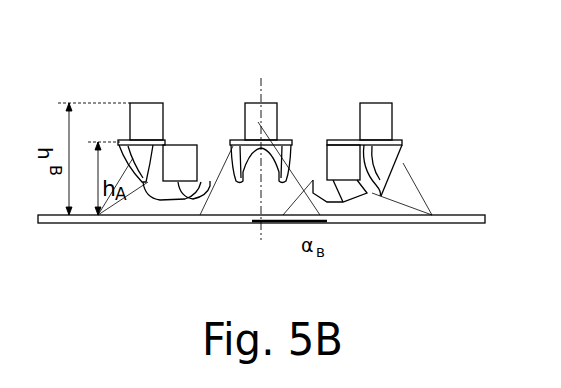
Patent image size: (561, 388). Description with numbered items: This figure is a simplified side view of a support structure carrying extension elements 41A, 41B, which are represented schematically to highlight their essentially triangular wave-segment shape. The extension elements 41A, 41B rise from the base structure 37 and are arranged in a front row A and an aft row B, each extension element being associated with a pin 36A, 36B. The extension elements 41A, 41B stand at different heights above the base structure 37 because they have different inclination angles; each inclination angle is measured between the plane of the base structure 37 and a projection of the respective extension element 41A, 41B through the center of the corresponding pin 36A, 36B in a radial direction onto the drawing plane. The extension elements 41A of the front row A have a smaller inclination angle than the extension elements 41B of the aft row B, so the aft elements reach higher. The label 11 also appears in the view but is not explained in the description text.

The cutting tool 11 is at (258, 105).
The pin 36A is at (183, 150).
The pin 36B is at (150, 113).
The base structure 37 is at (73, 223).
The extension element 41A is at (168, 200).
The extension element 41B is at (238, 193).
The front row A is at (422, 168).
The aft row B is at (422, 121).